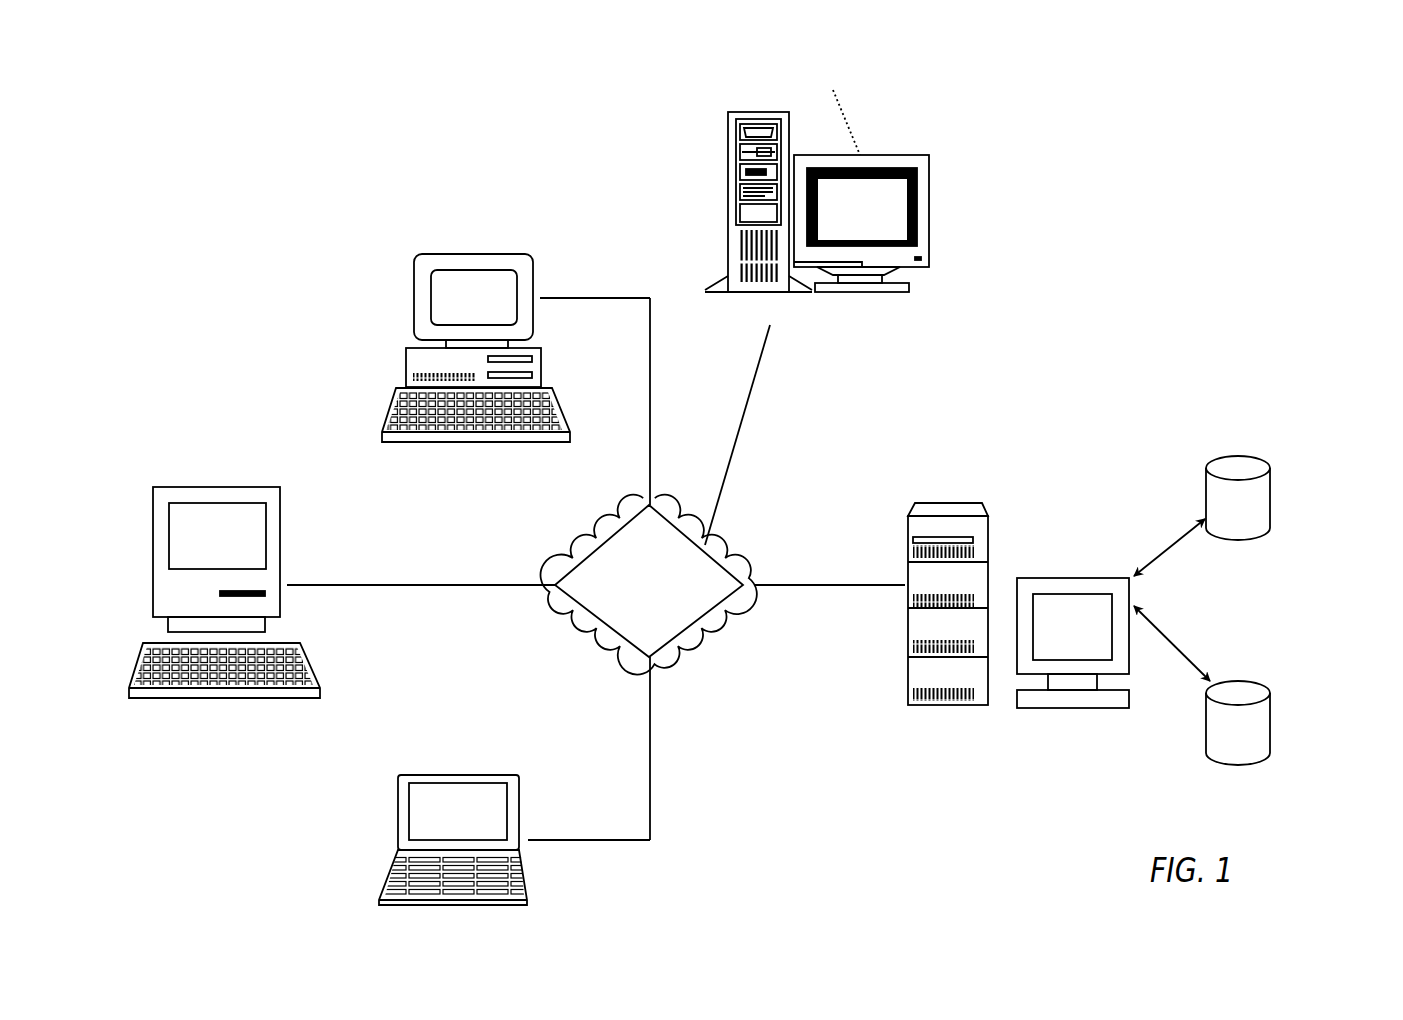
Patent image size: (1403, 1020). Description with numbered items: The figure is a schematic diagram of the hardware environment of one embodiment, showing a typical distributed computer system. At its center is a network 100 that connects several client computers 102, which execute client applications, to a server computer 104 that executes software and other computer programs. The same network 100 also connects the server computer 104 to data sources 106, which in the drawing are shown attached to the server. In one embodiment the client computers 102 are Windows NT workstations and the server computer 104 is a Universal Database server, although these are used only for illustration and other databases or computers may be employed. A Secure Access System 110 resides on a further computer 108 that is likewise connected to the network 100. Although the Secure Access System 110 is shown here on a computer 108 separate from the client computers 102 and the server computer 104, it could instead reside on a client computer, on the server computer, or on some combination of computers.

The network 100 is at (737, 555).
The client computers 102 is at (542, 240).
The server computer 104 is at (1012, 720).
The data sources 106 is at (1277, 482).
The computer 108 is at (930, 198).
The Secure Access System 110 is at (867, 165).